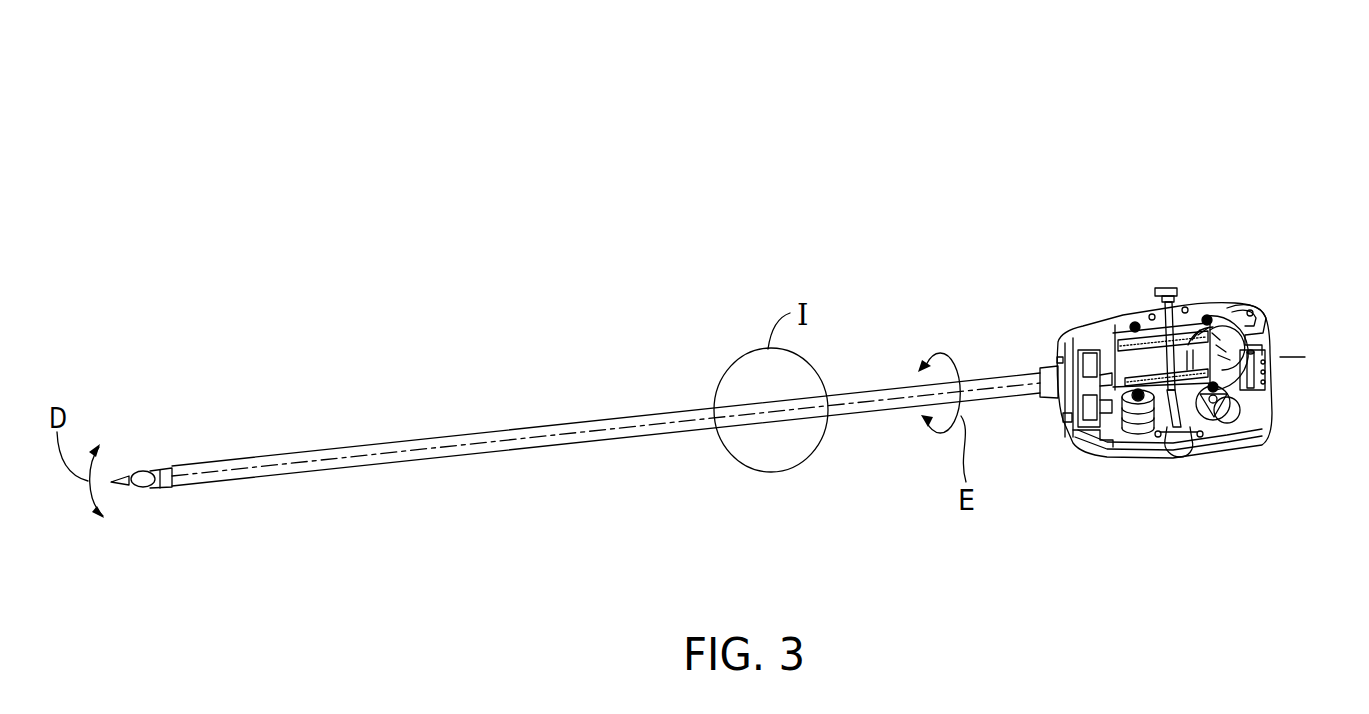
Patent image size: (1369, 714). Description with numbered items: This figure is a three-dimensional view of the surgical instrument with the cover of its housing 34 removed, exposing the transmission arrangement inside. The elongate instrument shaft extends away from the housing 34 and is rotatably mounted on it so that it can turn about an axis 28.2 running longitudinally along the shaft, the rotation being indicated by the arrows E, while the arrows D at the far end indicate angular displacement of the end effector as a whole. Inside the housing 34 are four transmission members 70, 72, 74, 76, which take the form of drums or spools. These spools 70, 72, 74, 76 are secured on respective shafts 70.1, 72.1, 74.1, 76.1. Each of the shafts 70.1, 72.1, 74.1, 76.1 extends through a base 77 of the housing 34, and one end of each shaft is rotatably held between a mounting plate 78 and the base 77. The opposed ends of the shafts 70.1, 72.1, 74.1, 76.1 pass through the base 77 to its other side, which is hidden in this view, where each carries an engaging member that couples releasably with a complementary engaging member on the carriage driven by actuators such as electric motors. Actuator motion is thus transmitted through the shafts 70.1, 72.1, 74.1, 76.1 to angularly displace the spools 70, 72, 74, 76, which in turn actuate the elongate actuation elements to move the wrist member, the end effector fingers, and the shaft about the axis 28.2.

The housing 34 is at (1186, 120).
The axis 28.2 is at (589, 432).
The transmission member 70 is at (1245, 330).
The shaft 70.1 is at (1205, 316).
The transmission member 72 is at (1228, 408).
The shaft 72.1 is at (1218, 386).
The transmission member 74 is at (1148, 428).
The shaft 74.1 is at (1120, 396).
The transmission member 76 is at (1130, 322).
The shaft 76.1 is at (1128, 322).
The base 77 is at (1208, 435).
The mounting plate 78 is at (1126, 360).